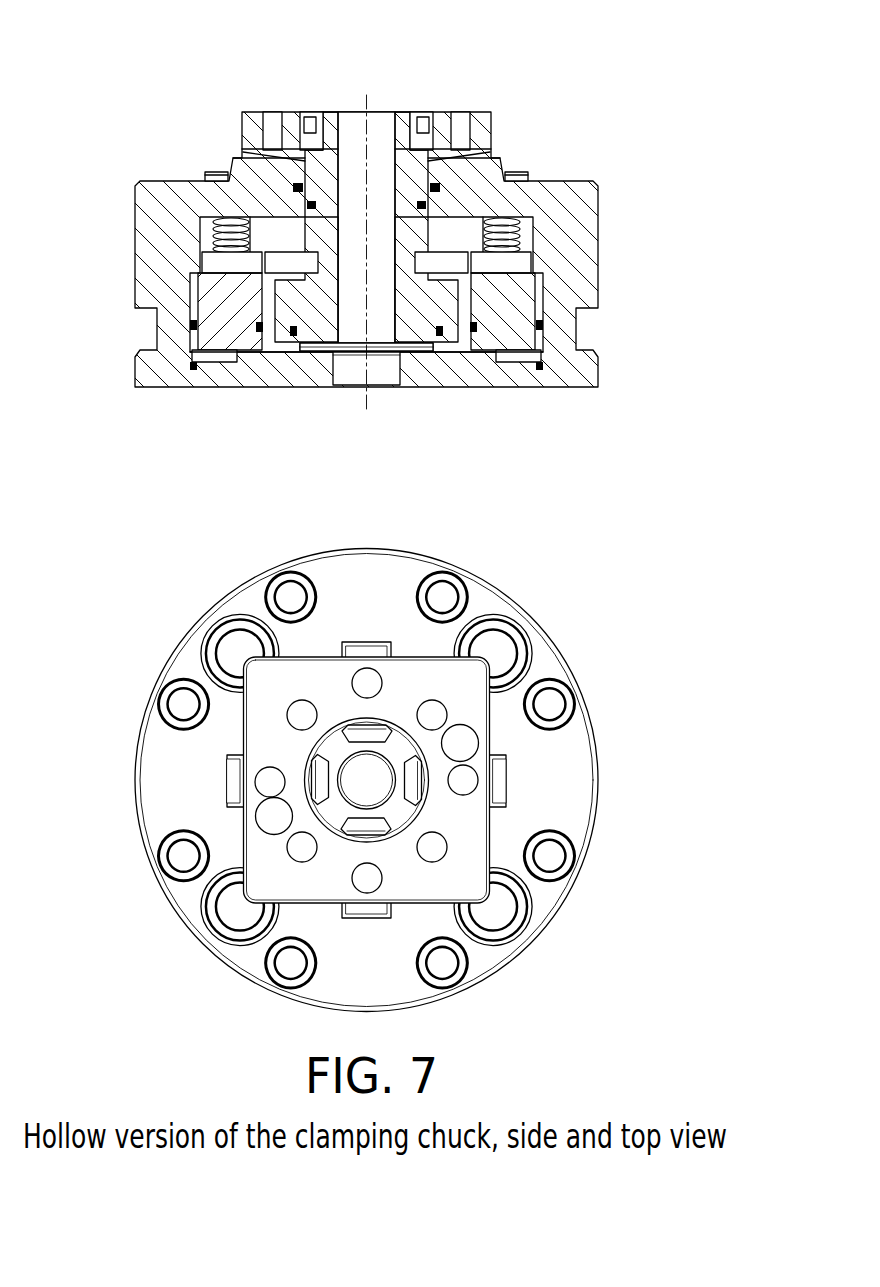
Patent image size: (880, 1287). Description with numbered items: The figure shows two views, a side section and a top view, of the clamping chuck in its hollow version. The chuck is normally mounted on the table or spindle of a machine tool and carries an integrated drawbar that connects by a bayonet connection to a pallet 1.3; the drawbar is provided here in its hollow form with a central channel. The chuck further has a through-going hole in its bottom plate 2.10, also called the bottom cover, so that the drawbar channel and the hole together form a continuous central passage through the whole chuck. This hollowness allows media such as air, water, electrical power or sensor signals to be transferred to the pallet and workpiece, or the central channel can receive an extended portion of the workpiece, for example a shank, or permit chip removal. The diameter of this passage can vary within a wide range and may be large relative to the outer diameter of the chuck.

The pallet 1.3 is at (422, 677).
The bottom plate 2.10 is at (457, 367).